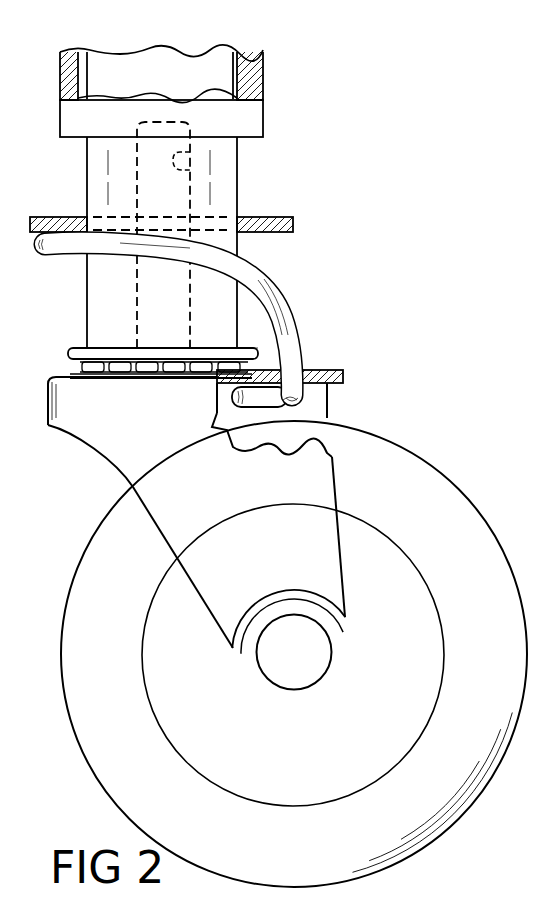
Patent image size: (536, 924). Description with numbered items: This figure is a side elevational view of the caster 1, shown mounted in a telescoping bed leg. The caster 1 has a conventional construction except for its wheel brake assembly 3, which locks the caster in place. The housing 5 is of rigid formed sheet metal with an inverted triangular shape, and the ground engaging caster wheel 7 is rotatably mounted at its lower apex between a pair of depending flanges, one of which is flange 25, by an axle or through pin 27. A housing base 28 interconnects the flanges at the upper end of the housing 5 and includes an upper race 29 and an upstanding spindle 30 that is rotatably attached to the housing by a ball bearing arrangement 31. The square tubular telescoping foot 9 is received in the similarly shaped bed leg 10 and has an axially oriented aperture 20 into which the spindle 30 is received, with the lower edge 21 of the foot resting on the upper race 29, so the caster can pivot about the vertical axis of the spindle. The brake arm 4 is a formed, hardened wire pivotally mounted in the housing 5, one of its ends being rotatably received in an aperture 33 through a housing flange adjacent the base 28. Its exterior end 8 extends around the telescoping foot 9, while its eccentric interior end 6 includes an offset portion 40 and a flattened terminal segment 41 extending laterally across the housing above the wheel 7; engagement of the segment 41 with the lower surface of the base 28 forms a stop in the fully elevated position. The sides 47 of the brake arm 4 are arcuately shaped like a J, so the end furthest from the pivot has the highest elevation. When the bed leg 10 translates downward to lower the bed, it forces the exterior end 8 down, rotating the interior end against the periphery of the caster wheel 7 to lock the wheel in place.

The caster 1 is at (421, 441).
The wheel brake assembly 3 is at (264, 266).
The brake arm 4 is at (296, 323).
The housing 5 is at (83, 421).
The interior end 6 is at (228, 422).
The caster wheel 7 is at (455, 506).
The exterior end 8 is at (47, 256).
The telescoping foot 9 is at (116, 57).
The bed leg 10 is at (254, 112).
The aperture 20 is at (228, 152).
The lower edge 21 is at (70, 139).
The depending flange 25 is at (310, 478).
The axle or through pin 27 is at (310, 668).
The housing base 28 is at (307, 378).
The upper race 29 is at (246, 345).
The spindle 30 is at (152, 155).
The ball bearing arrangement 31 is at (78, 368).
The aperture 33 is at (304, 398).
The offset portion 40 is at (270, 410).
The flattened terminal segment 41 is at (233, 390).
The sides 47 is at (158, 254).